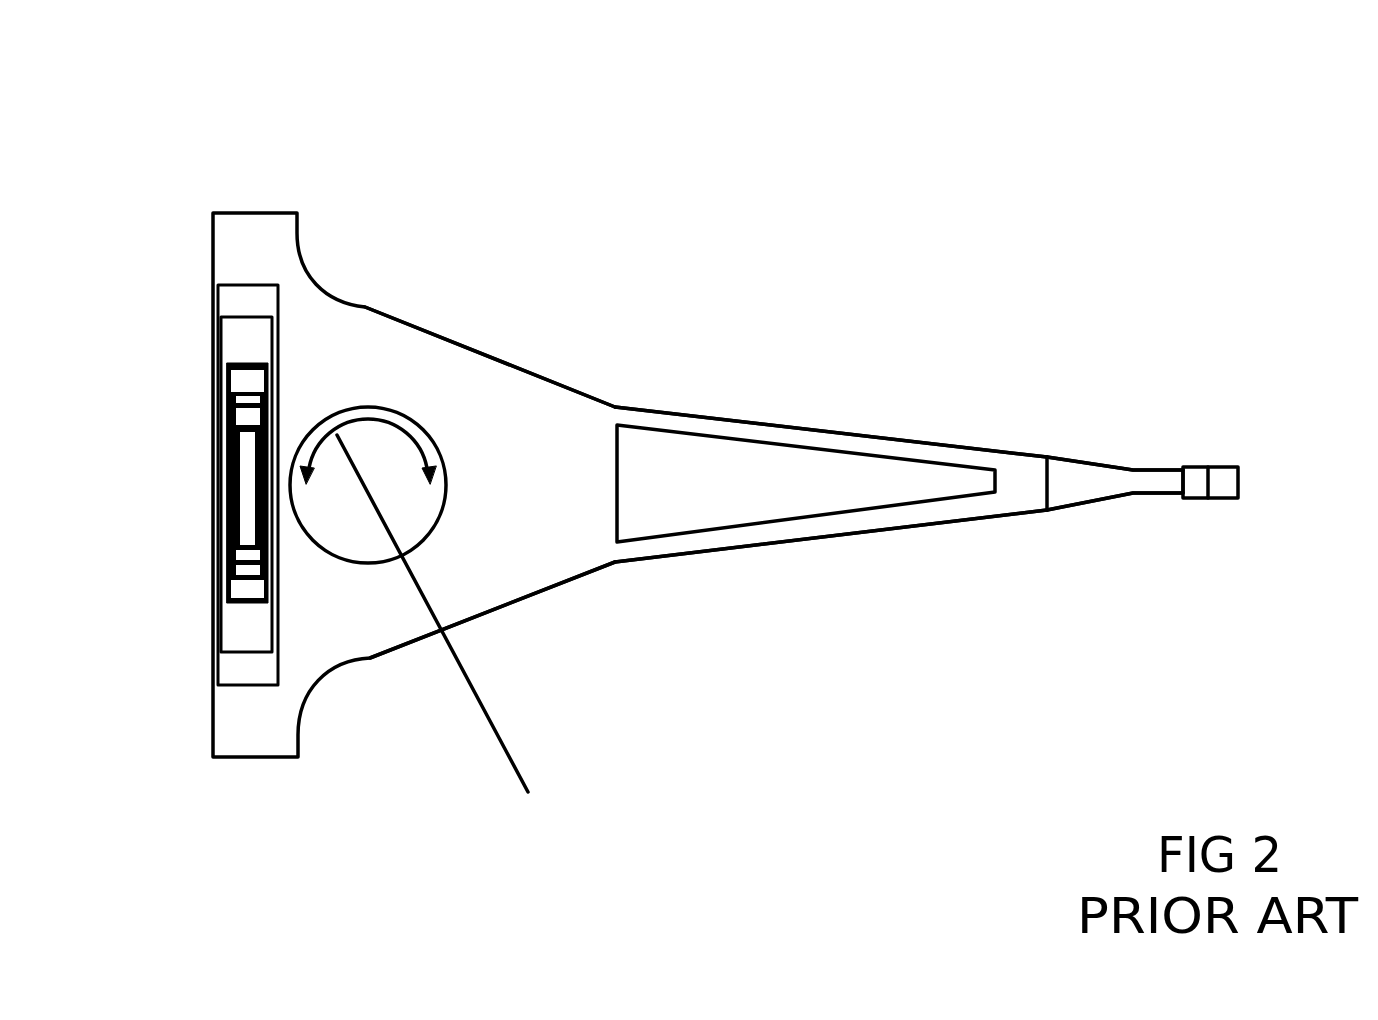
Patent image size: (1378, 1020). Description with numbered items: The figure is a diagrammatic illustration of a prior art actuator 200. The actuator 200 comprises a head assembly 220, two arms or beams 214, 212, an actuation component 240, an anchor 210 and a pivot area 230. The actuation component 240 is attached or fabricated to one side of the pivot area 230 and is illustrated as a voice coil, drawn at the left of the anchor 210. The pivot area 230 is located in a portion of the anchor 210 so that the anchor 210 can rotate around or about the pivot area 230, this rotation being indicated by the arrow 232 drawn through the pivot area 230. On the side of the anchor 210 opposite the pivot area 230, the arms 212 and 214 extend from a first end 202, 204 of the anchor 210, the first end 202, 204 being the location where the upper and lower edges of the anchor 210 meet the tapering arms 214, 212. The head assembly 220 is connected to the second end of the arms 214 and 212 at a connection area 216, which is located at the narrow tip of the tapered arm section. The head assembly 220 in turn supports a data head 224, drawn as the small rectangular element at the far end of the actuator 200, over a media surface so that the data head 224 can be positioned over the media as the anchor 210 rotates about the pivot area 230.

The actuator 200 is at (701, 433).
The first end 202 is at (617, 405).
The first end 204 is at (617, 562).
The anchor 210 is at (443, 392).
The arm 212 is at (835, 532).
The arm 214 is at (798, 428).
The connection area 216 is at (1000, 483).
The head assembly 220 is at (1080, 462).
The data head 224 is at (1237, 483).
The pivot area 230 is at (368, 410).
The arrow 232 is at (528, 792).
The actuation component 240 is at (227, 420).